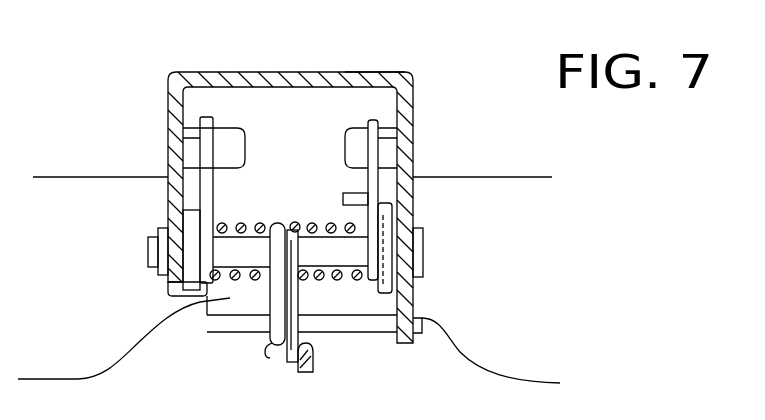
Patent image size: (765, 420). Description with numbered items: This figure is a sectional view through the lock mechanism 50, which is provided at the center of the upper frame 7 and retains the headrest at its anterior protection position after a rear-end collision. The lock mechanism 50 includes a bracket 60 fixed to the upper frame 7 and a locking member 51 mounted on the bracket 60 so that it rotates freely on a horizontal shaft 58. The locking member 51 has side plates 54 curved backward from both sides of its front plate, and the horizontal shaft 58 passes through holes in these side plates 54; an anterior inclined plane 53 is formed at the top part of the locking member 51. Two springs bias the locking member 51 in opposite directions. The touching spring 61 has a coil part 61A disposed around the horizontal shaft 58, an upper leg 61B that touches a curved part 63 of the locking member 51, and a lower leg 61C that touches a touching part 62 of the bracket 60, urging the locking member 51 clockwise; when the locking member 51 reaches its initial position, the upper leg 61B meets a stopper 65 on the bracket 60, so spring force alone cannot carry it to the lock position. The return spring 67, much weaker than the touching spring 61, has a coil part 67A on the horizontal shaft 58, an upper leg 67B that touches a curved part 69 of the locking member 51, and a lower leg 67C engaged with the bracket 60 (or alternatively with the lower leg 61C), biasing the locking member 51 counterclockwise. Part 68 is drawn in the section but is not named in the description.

The upper frame 7 is at (497, 177).
The lock mechanism 50 is at (289, 181).
The locking member 51 is at (377, 44).
The anterior inclined plane 53 is at (296, 72).
The side plate 54 is at (168, 150).
The horizontal shaft 58 is at (420, 250).
The bracket 60 is at (183, 305).
The touching spring 61 is at (384, 211).
The coil part 61A is at (338, 282).
The upper leg 61B is at (413, 130).
The lower leg 61C is at (293, 365).
The touching part 62 is at (360, 325).
The curved part 63 is at (345, 140).
The stopper 65 is at (350, 196).
The return spring 67 is at (168, 196).
The coil part 67A is at (243, 223).
The upper leg 67B is at (186, 130).
The lower leg 67C is at (274, 350).
The base plate 68 is at (242, 322).
The curved part 69 is at (220, 143).